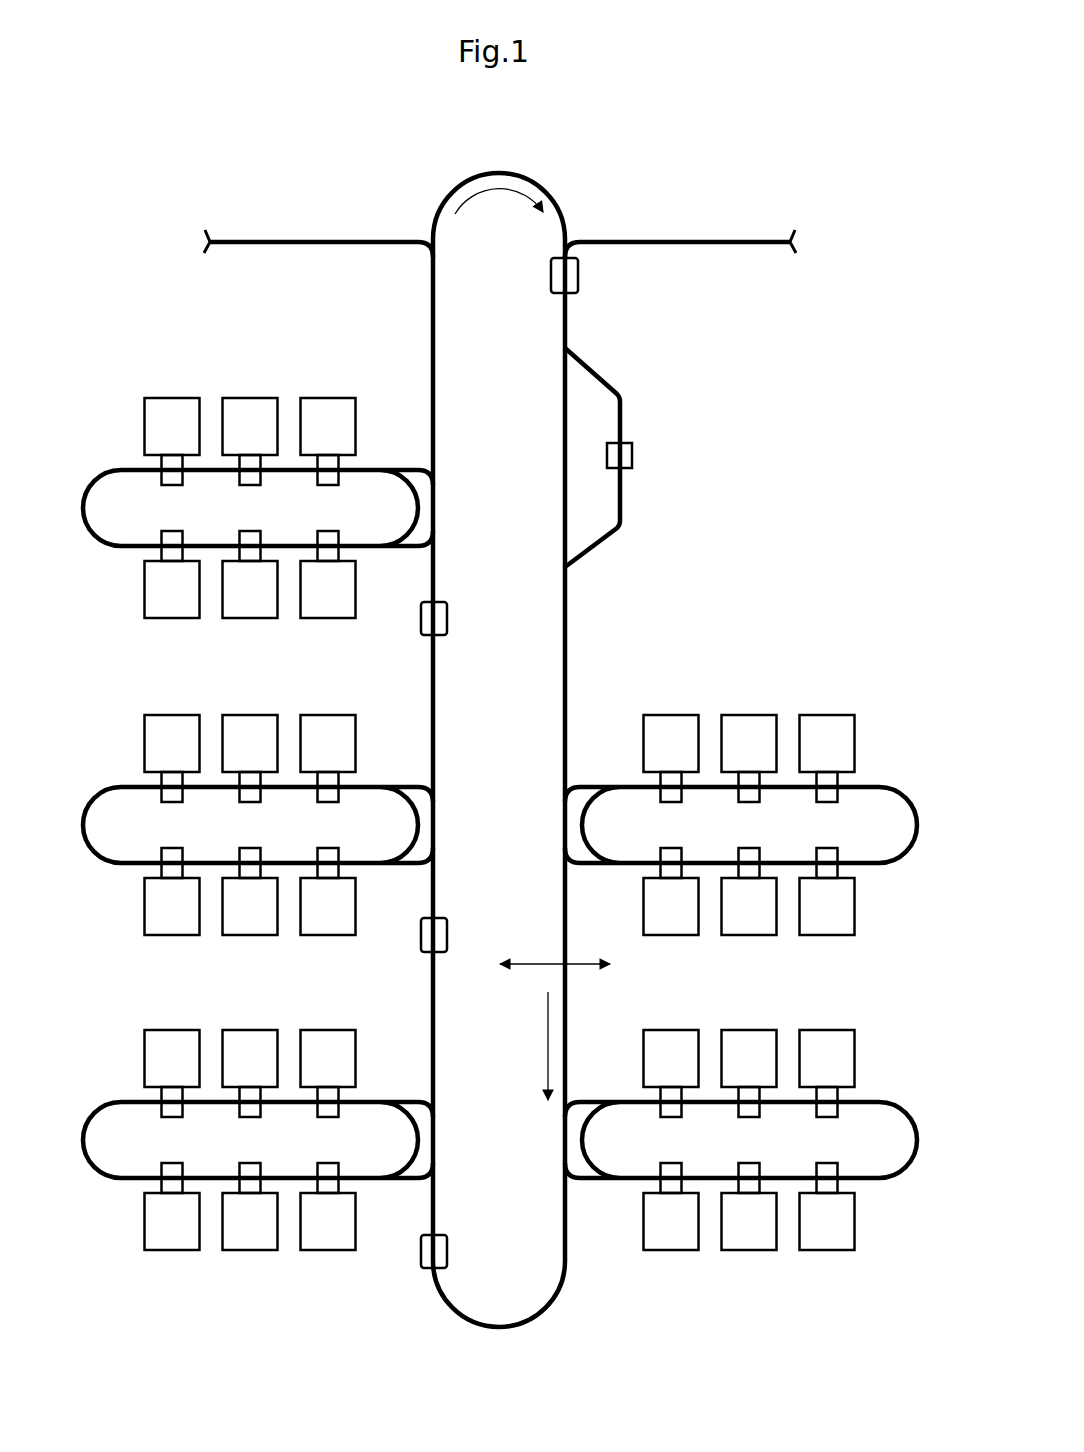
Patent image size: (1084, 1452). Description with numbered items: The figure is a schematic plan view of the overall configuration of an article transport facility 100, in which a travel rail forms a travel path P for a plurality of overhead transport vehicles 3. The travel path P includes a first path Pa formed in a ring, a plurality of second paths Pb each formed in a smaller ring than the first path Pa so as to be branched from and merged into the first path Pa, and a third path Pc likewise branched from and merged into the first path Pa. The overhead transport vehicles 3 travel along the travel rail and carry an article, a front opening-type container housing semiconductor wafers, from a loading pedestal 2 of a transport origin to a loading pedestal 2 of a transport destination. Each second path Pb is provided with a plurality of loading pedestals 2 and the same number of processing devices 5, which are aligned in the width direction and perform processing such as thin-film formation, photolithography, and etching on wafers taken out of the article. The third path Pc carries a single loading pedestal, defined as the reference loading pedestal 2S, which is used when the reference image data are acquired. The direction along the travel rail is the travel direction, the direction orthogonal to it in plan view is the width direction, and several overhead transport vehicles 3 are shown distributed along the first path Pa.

The article transport facility 100 is at (662, 170).
The travel path P is at (335, 240).
The first path Pa is at (410, 322).
The second path Pb is at (100, 455).
The third path Pc is at (657, 394).
The loading pedestal 2 is at (250, 485).
The reference loading pedestal 2S is at (632, 456).
The overhead transport vehicle 3 is at (578, 278).
The processing device 5 is at (328, 398).